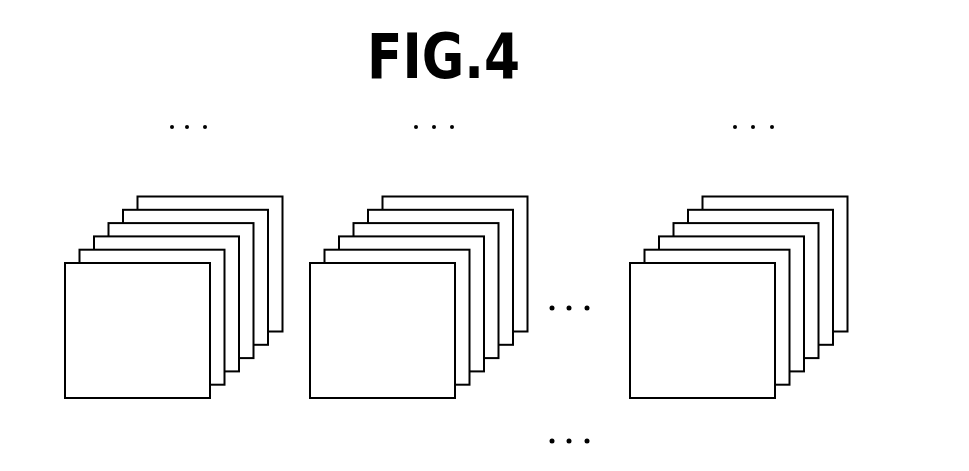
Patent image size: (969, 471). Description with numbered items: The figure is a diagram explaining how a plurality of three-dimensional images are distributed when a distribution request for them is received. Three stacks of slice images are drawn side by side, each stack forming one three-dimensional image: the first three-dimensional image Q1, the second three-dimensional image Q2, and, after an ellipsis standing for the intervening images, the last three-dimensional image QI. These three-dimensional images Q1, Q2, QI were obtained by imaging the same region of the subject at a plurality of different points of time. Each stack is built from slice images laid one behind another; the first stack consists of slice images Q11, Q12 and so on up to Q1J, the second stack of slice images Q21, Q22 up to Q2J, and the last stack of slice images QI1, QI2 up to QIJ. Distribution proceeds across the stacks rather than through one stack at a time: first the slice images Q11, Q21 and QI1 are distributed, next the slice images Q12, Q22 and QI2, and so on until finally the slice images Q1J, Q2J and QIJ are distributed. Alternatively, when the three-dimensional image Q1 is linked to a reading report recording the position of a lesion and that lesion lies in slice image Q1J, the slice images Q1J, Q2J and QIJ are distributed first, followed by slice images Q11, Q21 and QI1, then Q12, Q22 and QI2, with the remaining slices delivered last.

The three-dimensional image Q1 is at (169, 283).
The slice image Q11 is at (72, 263).
The slice image Q12 is at (85, 252).
The slice image Q1J is at (242, 197).
The three-dimensional image Q2 is at (415, 283).
The slice image Q21 is at (315, 263).
The slice image Q22 is at (330, 252).
The slice image Q2J is at (485, 197).
The three-dimensional image QI is at (736, 283).
The slice image QI1 is at (635, 263).
The slice image QI2 is at (650, 252).
The slice image QIJ is at (807, 197).